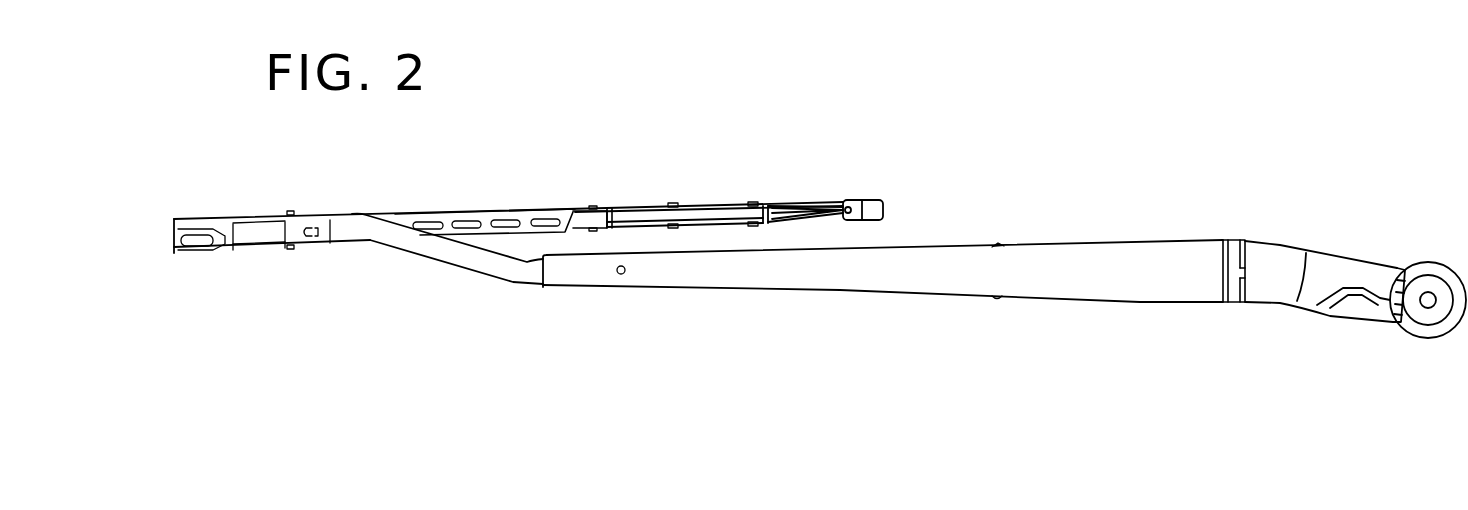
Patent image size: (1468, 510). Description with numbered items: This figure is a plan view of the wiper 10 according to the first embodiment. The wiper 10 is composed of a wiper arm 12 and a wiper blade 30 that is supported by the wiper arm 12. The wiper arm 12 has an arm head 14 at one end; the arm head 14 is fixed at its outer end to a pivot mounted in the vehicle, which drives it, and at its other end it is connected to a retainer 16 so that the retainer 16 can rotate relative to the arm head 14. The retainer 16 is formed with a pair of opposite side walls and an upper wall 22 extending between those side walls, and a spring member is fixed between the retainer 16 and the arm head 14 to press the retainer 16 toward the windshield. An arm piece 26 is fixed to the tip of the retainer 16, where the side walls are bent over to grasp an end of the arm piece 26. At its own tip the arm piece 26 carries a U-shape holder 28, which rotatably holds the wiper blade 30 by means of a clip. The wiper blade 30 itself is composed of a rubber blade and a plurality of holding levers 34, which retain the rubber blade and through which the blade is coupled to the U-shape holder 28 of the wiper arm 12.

The wiper 10 is at (718, 190).
The wiper arm 12 is at (1113, 390).
The arm head 14 is at (1297, 308).
The retainer 16 is at (898, 291).
The upper wall 22 is at (1064, 266).
The arm piece 26 is at (530, 285).
The U-shape holder 28 is at (288, 213).
The wiper blade 30 is at (413, 211).
The holding levers 34 is at (626, 218).